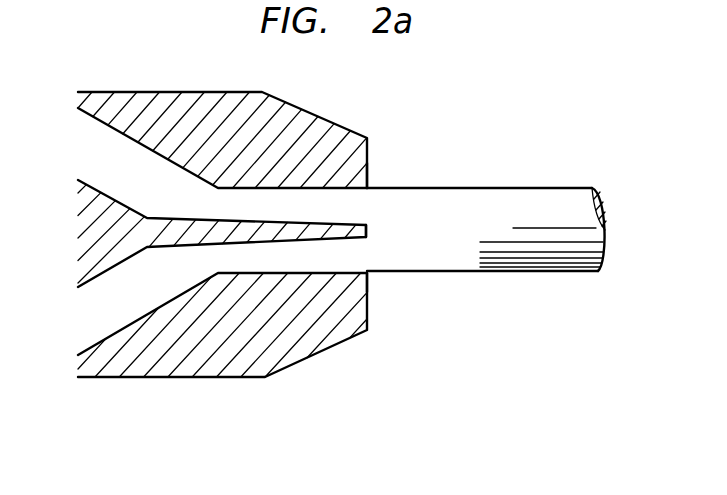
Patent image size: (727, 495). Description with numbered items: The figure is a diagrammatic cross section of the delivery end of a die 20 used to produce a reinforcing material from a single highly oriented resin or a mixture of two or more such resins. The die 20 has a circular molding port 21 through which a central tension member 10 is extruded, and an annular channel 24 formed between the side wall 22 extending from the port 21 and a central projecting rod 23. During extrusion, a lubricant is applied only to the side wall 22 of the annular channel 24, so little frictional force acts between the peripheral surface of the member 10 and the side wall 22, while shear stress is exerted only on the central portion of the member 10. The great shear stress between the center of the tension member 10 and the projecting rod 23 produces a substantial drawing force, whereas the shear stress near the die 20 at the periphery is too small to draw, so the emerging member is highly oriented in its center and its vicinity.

The central tension member 10 is at (462, 187).
The die 20 is at (306, 111).
The circular molding port 21 is at (355, 190).
The side wall 22 is at (355, 270).
The central projecting rod 23 is at (368, 231).
The annular channel 24 is at (337, 217).